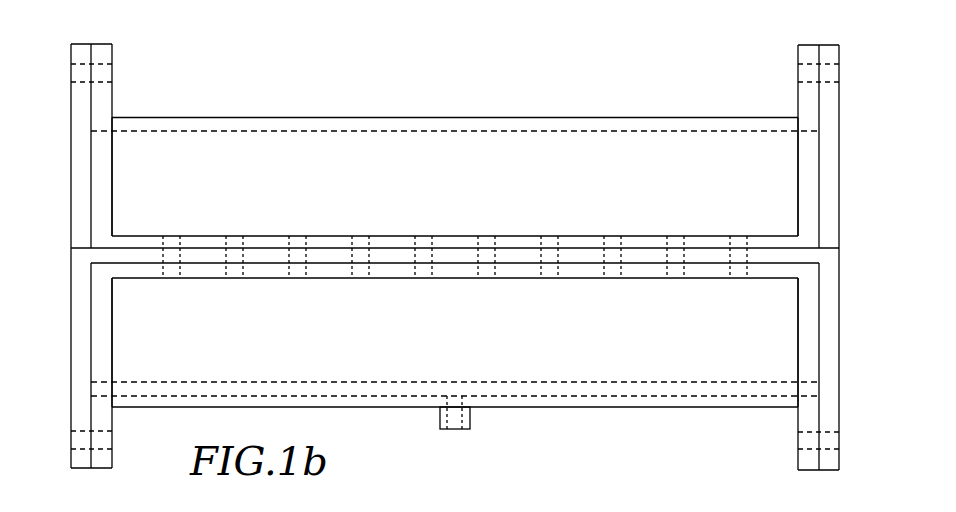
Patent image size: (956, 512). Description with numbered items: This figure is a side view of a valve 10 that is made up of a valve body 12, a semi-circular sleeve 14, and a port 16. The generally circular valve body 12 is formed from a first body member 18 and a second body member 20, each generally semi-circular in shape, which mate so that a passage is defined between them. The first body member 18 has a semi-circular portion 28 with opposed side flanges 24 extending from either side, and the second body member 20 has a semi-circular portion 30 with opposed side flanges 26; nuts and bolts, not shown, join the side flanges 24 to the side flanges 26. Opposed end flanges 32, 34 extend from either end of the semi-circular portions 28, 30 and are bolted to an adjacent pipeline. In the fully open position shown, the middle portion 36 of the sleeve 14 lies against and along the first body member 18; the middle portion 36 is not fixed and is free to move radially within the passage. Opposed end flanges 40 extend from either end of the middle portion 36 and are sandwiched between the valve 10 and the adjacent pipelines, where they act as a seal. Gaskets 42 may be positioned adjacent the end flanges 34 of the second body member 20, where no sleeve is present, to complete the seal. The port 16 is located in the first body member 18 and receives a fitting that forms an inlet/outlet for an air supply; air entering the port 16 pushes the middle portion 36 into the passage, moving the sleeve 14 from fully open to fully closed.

The valve 10 is at (650, 59).
The valve body 12 is at (278, 107).
The semi-circular sleeve 14 is at (559, 410).
The port 16 is at (428, 429).
The first body member 18 is at (671, 375).
The second body member 20 is at (542, 138).
The side flanges of first body member 24 is at (576, 268).
The side flanges of second body member 26 is at (577, 243).
The semi-circular portion of first body member 28 is at (455, 375).
The semi-circular portion of second body member 30 is at (455, 134).
The end flanges of first body member 32 is at (106, 308).
The end flanges of second body member 34 is at (107, 157).
The middle portion of sleeve 36 is at (238, 381).
The end flanges of sleeve 40 is at (70, 402).
The gaskets 42 is at (70, 167).